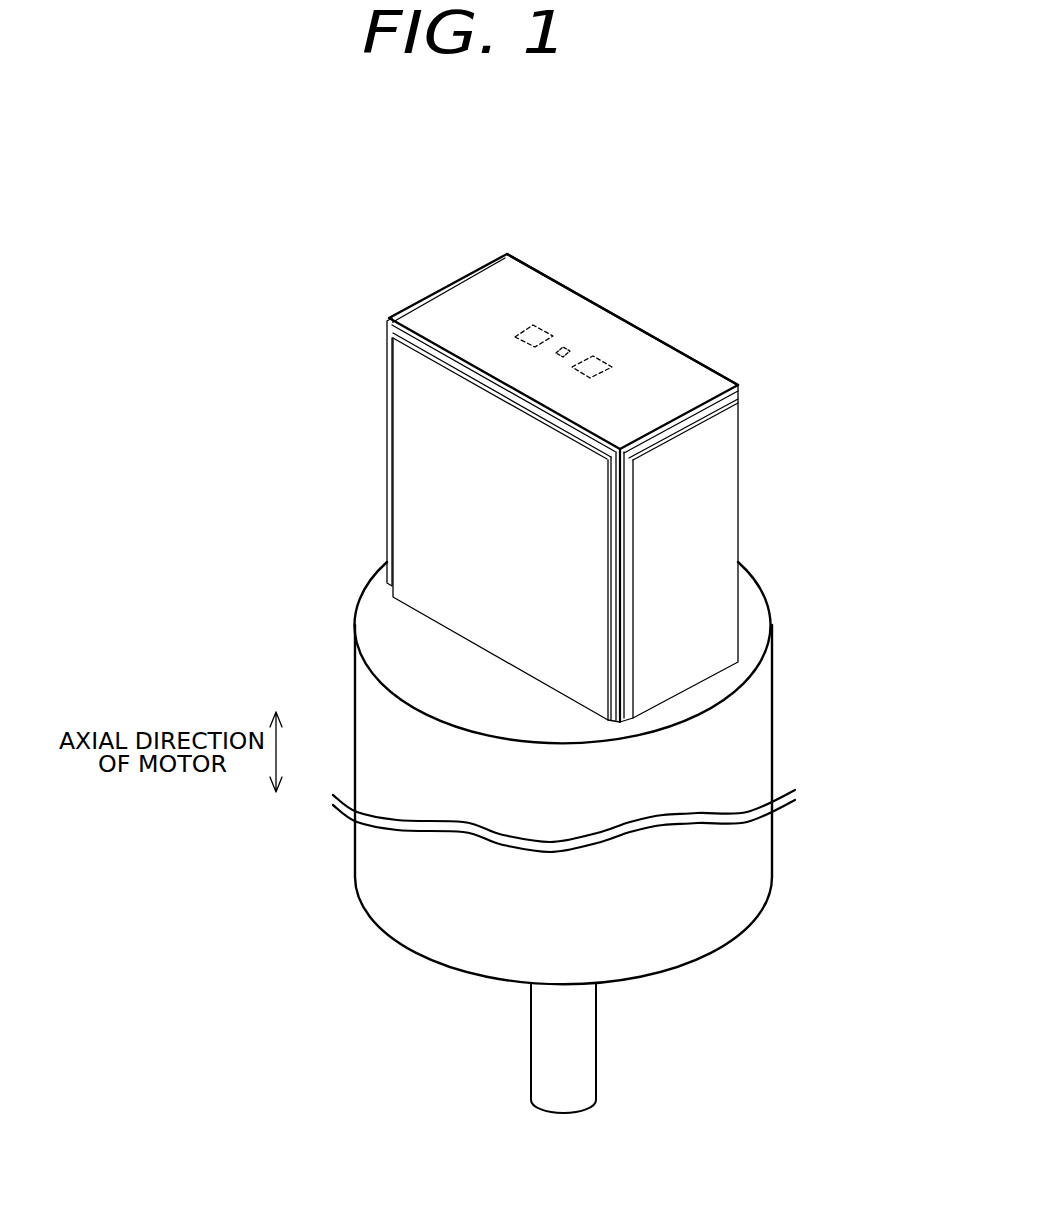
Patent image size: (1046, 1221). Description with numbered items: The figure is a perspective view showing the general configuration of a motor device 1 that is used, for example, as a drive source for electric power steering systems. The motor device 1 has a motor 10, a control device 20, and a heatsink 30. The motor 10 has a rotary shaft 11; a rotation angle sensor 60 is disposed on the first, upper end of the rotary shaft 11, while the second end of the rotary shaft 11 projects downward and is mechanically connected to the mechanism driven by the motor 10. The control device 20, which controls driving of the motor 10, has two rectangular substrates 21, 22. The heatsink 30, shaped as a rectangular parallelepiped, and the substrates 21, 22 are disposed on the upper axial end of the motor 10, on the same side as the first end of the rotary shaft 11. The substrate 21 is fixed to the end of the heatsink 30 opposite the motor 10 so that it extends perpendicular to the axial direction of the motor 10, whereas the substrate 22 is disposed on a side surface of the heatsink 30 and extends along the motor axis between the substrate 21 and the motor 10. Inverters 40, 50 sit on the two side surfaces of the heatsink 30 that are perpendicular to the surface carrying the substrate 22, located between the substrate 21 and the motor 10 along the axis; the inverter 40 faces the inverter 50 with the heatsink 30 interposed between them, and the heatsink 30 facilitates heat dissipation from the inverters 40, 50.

The motor device 1 is at (682, 254).
The motor 10 is at (815, 670).
The rotary shaft 11 is at (596, 1046).
The control device 20 is at (453, 237).
The substrate 21 is at (450, 300).
The substrate 22 is at (420, 348).
The heatsink 30 is at (698, 360).
The inverter 40 is at (737, 488).
The inverter 50 is at (386, 321).
The rotation angle sensor 60 is at (548, 320).